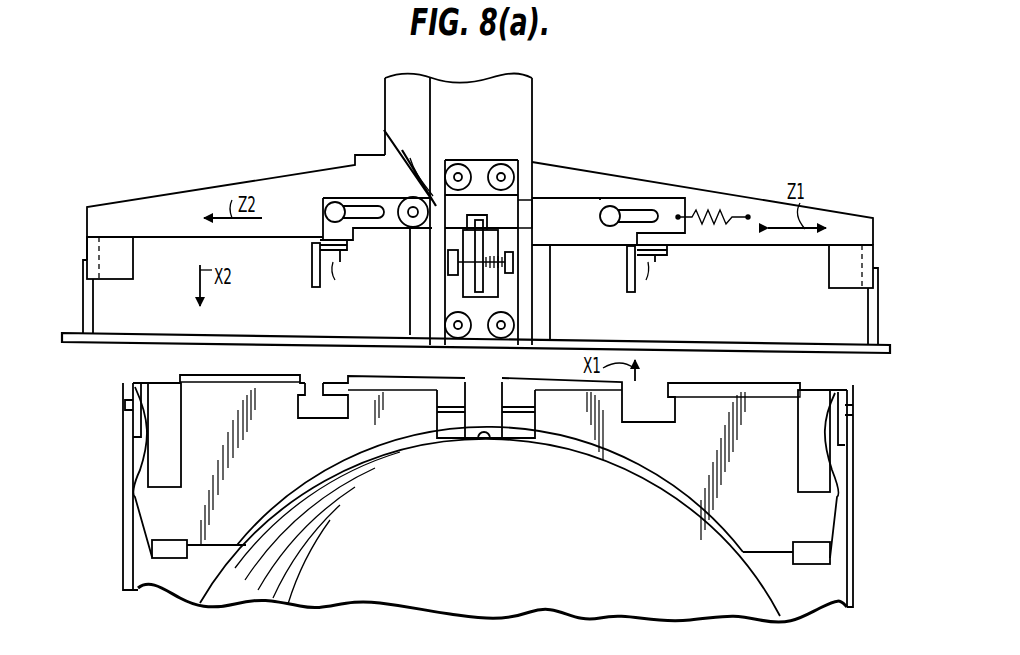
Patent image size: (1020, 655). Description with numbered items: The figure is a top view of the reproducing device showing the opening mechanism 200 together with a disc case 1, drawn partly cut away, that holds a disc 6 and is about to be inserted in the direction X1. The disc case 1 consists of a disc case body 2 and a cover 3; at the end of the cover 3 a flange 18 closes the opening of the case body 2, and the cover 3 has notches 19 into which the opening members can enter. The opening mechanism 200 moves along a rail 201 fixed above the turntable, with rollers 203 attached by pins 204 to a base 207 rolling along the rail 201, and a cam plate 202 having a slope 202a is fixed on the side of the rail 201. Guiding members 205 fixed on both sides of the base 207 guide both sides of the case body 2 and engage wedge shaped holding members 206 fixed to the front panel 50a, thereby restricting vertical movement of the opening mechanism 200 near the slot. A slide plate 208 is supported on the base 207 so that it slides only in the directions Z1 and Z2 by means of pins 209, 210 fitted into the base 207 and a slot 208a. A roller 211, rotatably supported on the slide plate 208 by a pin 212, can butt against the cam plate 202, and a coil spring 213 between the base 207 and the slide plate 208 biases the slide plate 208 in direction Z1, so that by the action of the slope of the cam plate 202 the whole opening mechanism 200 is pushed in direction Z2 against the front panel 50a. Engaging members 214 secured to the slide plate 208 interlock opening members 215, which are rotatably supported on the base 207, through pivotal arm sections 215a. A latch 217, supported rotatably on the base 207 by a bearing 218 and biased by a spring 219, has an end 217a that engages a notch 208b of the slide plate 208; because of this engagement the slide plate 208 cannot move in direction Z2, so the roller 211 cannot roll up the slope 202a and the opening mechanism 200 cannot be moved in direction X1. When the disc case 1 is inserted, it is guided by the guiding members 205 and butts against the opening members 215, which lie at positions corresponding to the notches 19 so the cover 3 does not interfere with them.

The disc case 1 is at (123, 545).
The disc case body 2 is at (142, 588).
The cover 3 is at (190, 408).
The disc 6 is at (745, 589).
The flange 18 is at (747, 383).
The notches 19 is at (323, 392).
The front panel 50a is at (152, 343).
The opening mechanism 200 is at (220, 184).
The rail 201 is at (520, 92).
The cam plate 202 is at (384, 96).
The slope 202a is at (380, 142).
The rollers 203 is at (494, 168).
The pins 204 is at (510, 172).
The guiding members 205 is at (120, 259).
The wedge shaped holding members 206 is at (84, 296).
The base 207 is at (848, 226).
The slide plate 208 is at (596, 200).
The slot 208a is at (360, 208).
The notch 208b is at (512, 205).
The pin 209 is at (325, 207).
The pin 210 is at (614, 205).
The roller 211 is at (407, 222).
The pin 212 is at (410, 230).
The coil spring 213 is at (722, 224).
The engaging members 214 is at (320, 247).
The opening members 215 is at (310, 278).
The pivotal arm sections 215a is at (333, 262).
The latch 217 is at (474, 262).
The end of latch 217a is at (487, 240).
The bearing 218 is at (414, 163).
The spring 219 is at (497, 275).